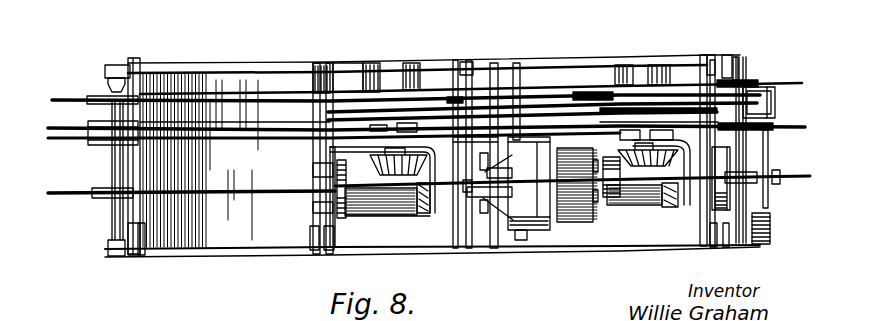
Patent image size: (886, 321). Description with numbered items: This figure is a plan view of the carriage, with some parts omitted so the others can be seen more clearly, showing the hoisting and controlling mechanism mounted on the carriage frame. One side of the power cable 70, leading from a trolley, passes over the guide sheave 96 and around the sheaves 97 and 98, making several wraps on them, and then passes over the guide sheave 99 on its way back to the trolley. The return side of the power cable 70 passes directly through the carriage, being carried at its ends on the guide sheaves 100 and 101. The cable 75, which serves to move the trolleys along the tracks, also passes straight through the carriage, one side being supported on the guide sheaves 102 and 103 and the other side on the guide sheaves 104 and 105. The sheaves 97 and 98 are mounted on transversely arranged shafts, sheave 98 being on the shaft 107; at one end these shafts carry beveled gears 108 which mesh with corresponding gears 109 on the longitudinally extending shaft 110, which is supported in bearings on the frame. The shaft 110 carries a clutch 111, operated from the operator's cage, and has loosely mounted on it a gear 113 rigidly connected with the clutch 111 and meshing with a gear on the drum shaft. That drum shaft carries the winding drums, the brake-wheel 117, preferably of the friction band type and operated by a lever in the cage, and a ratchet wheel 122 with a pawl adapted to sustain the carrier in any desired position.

The power cable 70 is at (52, 127).
The cable 75 is at (232, 97).
The guide sheave 96 is at (759, 103).
The sheave 97 is at (350, 100).
The sheave 98 is at (591, 100).
The guide sheave 99 is at (86, 96).
The guide sheave 100 is at (97, 143).
The guide sheave 101 is at (748, 128).
The guide sheave 102 is at (743, 78).
The guide sheave 103 is at (133, 75).
The guide sheave 104 is at (102, 200).
The guide sheave 105 is at (752, 198).
The shaft 107 is at (612, 165).
The beveled gear 108 is at (400, 168).
The gear 109 is at (418, 208).
The shaft 110 is at (605, 222).
The clutch 111 is at (497, 245).
The gear 113 is at (571, 222).
The brake-wheel 117 is at (747, 189).
The ratchet wheel 122 is at (352, 214).